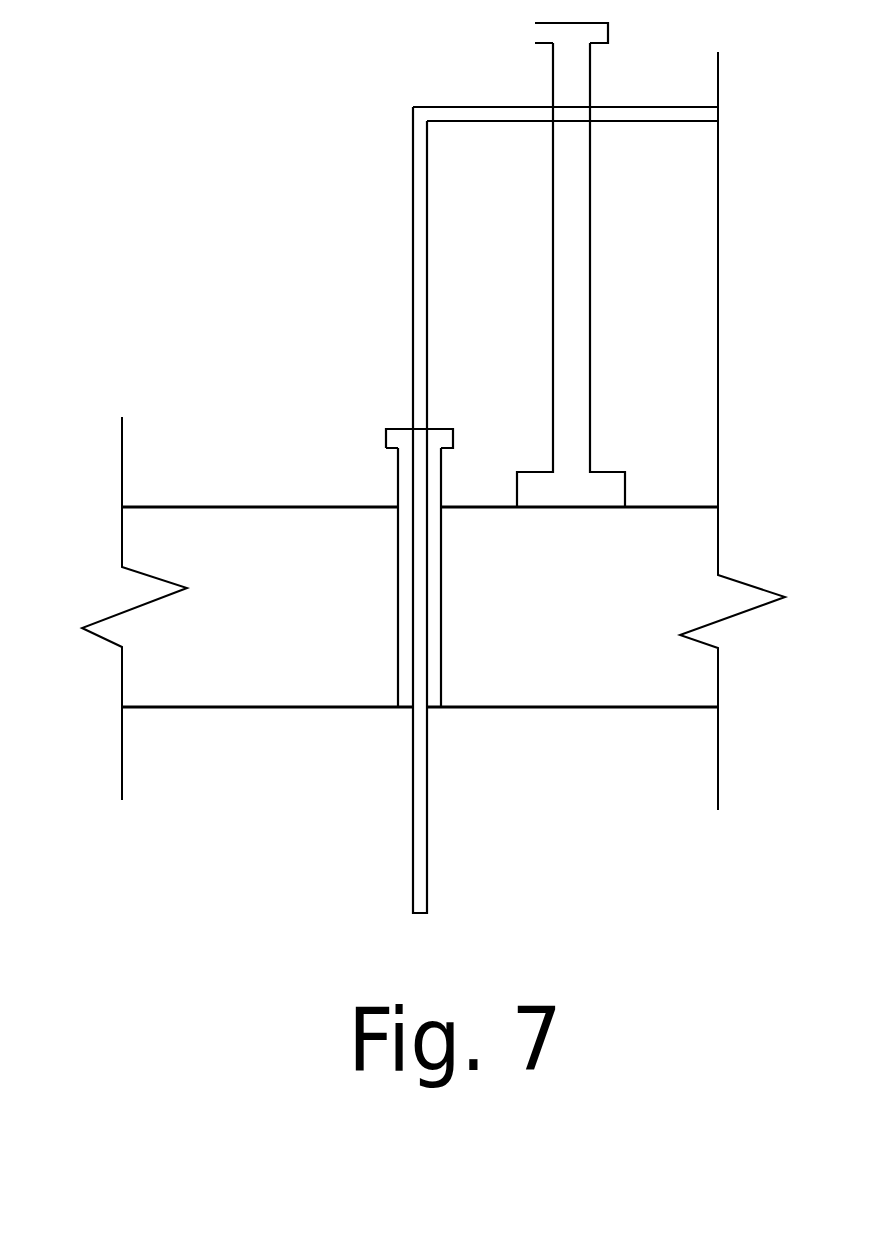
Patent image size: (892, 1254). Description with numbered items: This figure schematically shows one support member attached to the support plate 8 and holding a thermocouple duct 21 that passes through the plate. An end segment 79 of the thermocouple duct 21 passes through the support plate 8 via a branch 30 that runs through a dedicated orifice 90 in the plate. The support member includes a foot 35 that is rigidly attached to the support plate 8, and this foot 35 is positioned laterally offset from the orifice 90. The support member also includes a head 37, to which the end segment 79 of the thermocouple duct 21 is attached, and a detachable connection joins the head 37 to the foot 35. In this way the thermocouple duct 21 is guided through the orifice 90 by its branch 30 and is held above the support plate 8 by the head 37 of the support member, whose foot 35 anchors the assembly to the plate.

The support plate 8 is at (550, 680).
The thermocouple duct 21 is at (388, 238).
The end segment 79 is at (420, 413).
The head 37 is at (533, 78).
The foot 35 is at (612, 400).
The branch 30 is at (407, 492).
The orifice 90 is at (413, 660).